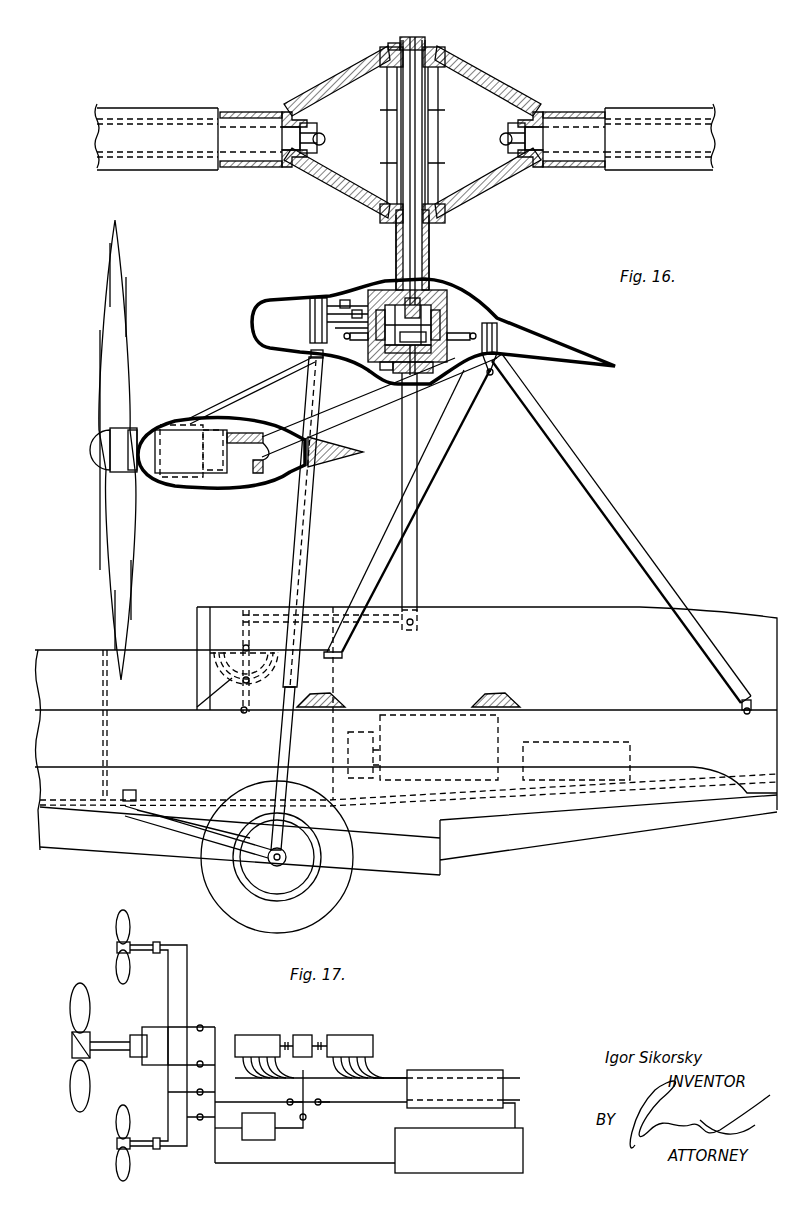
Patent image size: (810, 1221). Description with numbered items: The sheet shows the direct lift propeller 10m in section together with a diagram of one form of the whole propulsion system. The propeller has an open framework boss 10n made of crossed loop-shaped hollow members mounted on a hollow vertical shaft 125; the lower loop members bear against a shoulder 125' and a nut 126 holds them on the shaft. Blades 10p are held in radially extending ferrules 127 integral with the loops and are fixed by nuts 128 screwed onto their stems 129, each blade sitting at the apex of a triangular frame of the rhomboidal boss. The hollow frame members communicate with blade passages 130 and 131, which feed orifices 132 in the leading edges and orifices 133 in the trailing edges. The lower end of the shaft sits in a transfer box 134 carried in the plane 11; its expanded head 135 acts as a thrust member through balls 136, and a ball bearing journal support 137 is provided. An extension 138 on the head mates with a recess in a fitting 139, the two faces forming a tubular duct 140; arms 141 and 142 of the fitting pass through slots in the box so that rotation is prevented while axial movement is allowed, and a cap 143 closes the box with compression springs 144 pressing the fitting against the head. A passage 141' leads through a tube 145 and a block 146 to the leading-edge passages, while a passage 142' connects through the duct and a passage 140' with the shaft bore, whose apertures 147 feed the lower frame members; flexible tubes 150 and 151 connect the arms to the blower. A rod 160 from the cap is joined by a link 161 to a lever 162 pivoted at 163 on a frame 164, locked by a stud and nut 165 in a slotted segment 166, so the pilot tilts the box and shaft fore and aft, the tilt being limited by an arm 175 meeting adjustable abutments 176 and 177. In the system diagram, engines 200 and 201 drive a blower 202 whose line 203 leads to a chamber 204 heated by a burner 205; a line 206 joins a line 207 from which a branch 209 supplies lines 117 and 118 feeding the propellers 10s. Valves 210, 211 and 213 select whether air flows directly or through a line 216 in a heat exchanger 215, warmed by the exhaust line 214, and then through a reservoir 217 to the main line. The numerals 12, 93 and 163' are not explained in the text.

In FIG. 16, the blades 10p is at (120, 106).
In FIG. 16, the open framework boss 10n is at (330, 80).
In FIG. 16, the direct lift propeller 10m is at (508, 95).
In FIG. 17, the direct lift propeller 10m is at (75, 995).
In FIG. 16, the propellers 10s is at (122, 350).
In FIG. 17, the propellers 10s is at (130, 922).
In FIG. 16, the plane 11 is at (575, 345).
In FIG. 16, the fairing 12 is at (322, 697).
In FIG. 16, the nacelle 93 is at (185, 478).
In FIG. 16, the line 117 is at (260, 482).
In FIG. 17, the line 117 is at (188, 980).
In FIG. 16, the line 118 is at (296, 440).
In FIG. 17, the line 118 is at (168, 975).
In FIG. 16, the hollow vertical shaft 125 is at (442, 250).
In FIG. 16, the shoulder and bore 125' is at (452, 173).
In FIG. 16, the nut 126 is at (420, 50).
In FIG. 16, the ferrules 127 is at (248, 112).
In FIG. 16, the nuts 128 is at (314, 128).
In FIG. 16, the stems 129 is at (287, 158).
In FIG. 16, the passage 130 is at (175, 118).
In FIG. 16, the passage 131 is at (177, 160).
In FIG. 16, the orifices 132 is at (108, 265).
In FIG. 16, the orifices 133 is at (126, 290).
In FIG. 16, the transfer box 134 is at (446, 300).
In FIG. 16, the expanded head 135 is at (400, 300).
In FIG. 16, the balls 136 is at (430, 312).
In FIG. 16, the ball bearing journal support 137 is at (425, 300).
In FIG. 16, the extension 138 is at (447, 335).
In FIG. 16, the fitting 139 is at (455, 412).
In FIG. 16, the tubular duct 140 is at (386, 318).
In FIG. 16, the passage 140' is at (451, 309).
In FIG. 16, the arm 141 is at (409, 369).
In FIG. 16, the passage 141' is at (359, 362).
In FIG. 16, the arm 142 is at (524, 369).
In FIG. 16, the passage 142' is at (516, 328).
In FIG. 16, the cap 143 is at (402, 373).
In FIG. 16, the compression springs 144 is at (497, 372).
In FIG. 16, the tube 145 is at (425, 90).
In FIG. 16, the block 146 is at (412, 36).
In FIG. 16, the apertures 147 is at (435, 200).
In FIG. 17, the flexible tubing 150 is at (152, 1027).
In FIG. 17, the flexible tubing 151 is at (140, 1058).
In FIG. 16, the rod 160 is at (418, 545).
In FIG. 16, the link 161 is at (258, 612).
In FIG. 16, the lever 162 is at (240, 625).
In FIG. 16, the pivot and handle 163 is at (184, 658).
In FIG. 16, the sector 163' is at (242, 700).
In FIG. 16, the frame 164 is at (212, 654).
In FIG. 16, the threaded stud and nut 165 is at (250, 700).
In FIG. 16, the slotted segment 166 is at (215, 700).
In FIG. 16, the arm 175 is at (312, 300).
In FIG. 16, the adjustable abutment 176 is at (345, 298).
In FIG. 16, the adjustable abutment 177 is at (262, 320).
In FIG. 17, the internal combustion engine 200 is at (250, 1034).
In FIG. 17, the internal combustion engine 201 is at (333, 1034).
In FIG. 17, the positive action pump or blower 202 is at (305, 1034).
In FIG. 17, the line 203 is at (310, 1080).
In FIG. 17, the chamber 204 is at (258, 1126).
In FIG. 17, the burner 205 is at (192, 1120).
In FIG. 17, the line 206 is at (230, 1129).
In FIG. 17, the line 207 is at (213, 1163).
In FIG. 17, the branch 209 is at (210, 1092).
In FIG. 17, the valve 210 is at (307, 1117).
In FIG. 17, the valve 211 is at (322, 1103).
In FIG. 17, the valve 213 is at (290, 1100).
In FIG. 17, the line 214 is at (388, 1076).
In FIG. 17, the heat exchanger 215 is at (457, 1070).
In FIG. 17, the line 216 is at (395, 1128).
In FIG. 17, the air expansion chamber or reservoir 217 is at (459, 1150).